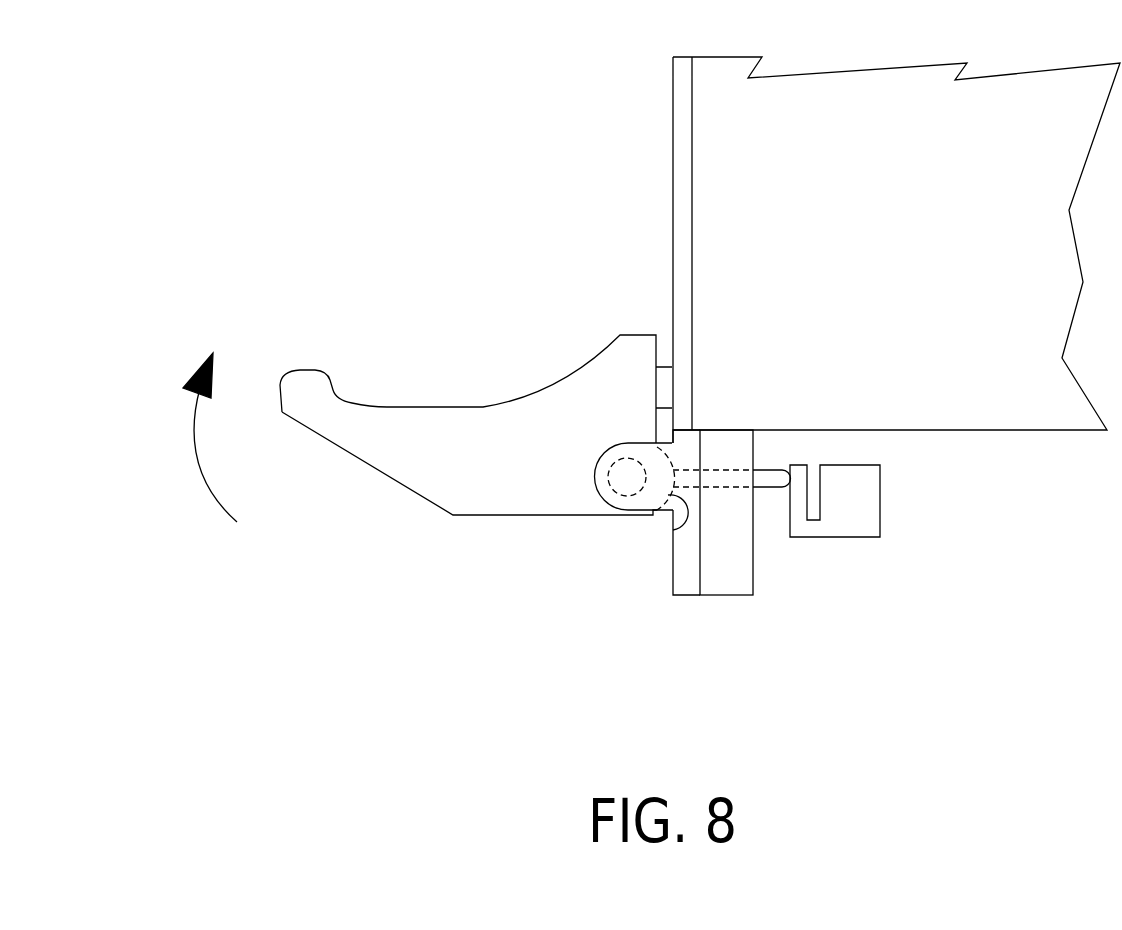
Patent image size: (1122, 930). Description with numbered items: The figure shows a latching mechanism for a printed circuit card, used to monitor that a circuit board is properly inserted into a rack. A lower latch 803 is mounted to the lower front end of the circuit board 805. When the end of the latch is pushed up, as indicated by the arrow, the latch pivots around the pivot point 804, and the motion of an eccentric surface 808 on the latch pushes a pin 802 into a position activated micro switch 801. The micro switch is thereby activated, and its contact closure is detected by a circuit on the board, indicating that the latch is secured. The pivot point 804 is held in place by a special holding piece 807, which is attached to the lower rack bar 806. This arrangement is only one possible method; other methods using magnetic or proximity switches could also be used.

The position activated micro switch 801 is at (842, 543).
The pin 802 is at (762, 492).
The lower latch 803 is at (510, 392).
The pivot point 804 is at (618, 458).
The circuit board 805 is at (667, 171).
The lower rack bar 806 is at (733, 602).
The special holding piece 807 is at (667, 583).
The eccentric surface 808 is at (675, 532).